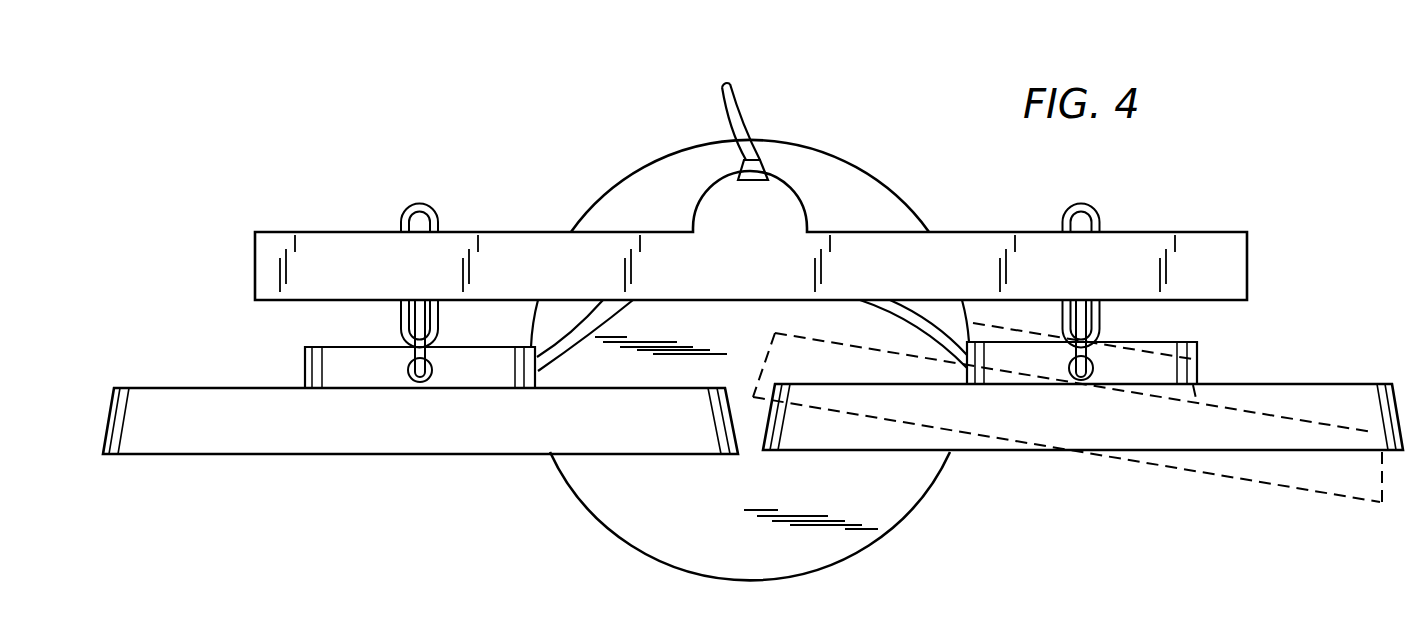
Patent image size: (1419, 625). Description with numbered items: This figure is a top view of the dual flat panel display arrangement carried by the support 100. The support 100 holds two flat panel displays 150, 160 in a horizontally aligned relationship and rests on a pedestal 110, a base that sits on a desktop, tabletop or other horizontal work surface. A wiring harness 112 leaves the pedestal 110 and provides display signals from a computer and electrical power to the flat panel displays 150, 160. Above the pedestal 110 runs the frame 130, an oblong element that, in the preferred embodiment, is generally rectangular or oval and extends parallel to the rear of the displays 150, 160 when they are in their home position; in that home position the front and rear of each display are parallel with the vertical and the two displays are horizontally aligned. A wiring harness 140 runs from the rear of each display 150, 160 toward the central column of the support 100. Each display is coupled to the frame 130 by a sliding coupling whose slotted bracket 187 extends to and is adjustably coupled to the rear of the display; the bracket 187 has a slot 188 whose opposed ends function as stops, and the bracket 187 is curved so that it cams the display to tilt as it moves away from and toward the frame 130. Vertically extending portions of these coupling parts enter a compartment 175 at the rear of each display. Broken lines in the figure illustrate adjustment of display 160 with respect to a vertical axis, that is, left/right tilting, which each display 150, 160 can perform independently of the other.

The support 100 is at (498, 141).
The pedestal 110 is at (868, 178).
The wiring harness 112 is at (740, 106).
The frame 130 is at (1265, 267).
The wiring harness 140 is at (567, 355).
The flat panel display 150 is at (343, 455).
The flat panel display 160 is at (1022, 456).
The compartment 175 is at (330, 352).
The slotted bracket 187 is at (432, 208).
The slot 188 is at (418, 226).